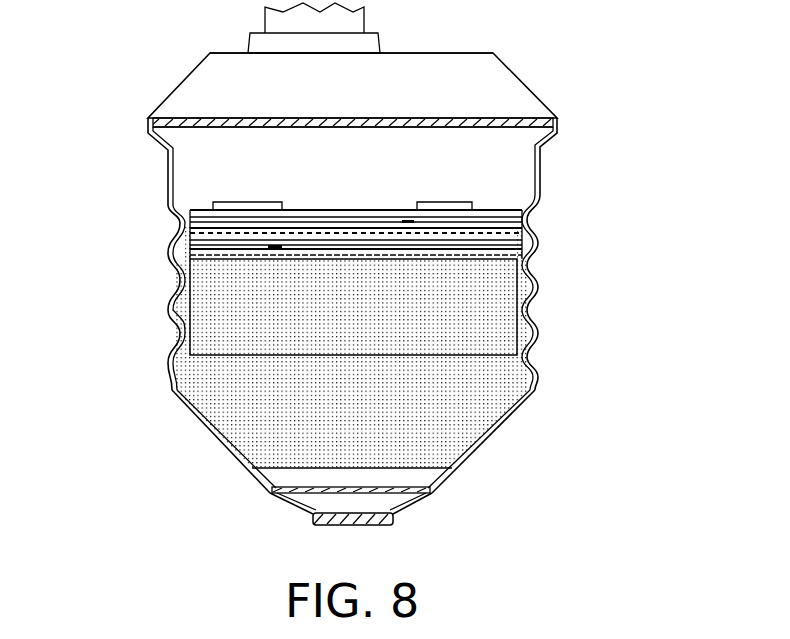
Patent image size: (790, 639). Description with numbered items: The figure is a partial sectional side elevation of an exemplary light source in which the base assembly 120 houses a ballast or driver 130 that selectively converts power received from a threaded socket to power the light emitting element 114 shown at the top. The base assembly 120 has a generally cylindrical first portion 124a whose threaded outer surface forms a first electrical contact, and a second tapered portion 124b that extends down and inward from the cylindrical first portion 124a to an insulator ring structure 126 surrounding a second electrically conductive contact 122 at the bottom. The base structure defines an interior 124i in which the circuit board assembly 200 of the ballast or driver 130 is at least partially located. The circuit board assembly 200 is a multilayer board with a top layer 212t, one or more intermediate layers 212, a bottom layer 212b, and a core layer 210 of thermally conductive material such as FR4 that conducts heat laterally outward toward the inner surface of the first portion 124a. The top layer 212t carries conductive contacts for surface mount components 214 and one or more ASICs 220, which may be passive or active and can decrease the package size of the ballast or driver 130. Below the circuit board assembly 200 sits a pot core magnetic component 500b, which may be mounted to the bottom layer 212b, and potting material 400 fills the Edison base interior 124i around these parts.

The light emitting element 114 is at (265, 17).
The base assembly 120 is at (368, 296).
The second electrically conductive contact 122 is at (313, 514).
The first portion 124a is at (615, 200).
The second tapered portion 124b is at (592, 385).
The interior 124i is at (206, 394).
The insulator ring structure 126 is at (402, 509).
The ballast or driver 130 is at (420, 396).
The circuit board assembly 200 is at (346, 221).
The core layer 210 is at (184, 232).
The intermediate layers 212 is at (529, 220).
The top layer 212t is at (318, 210).
The bottom layer 212b is at (529, 257).
The surface mount components 214 is at (252, 202).
The ASICs 220 is at (445, 202).
The potting material 400 is at (363, 414).
The pot core magnetic component 500b is at (372, 317).